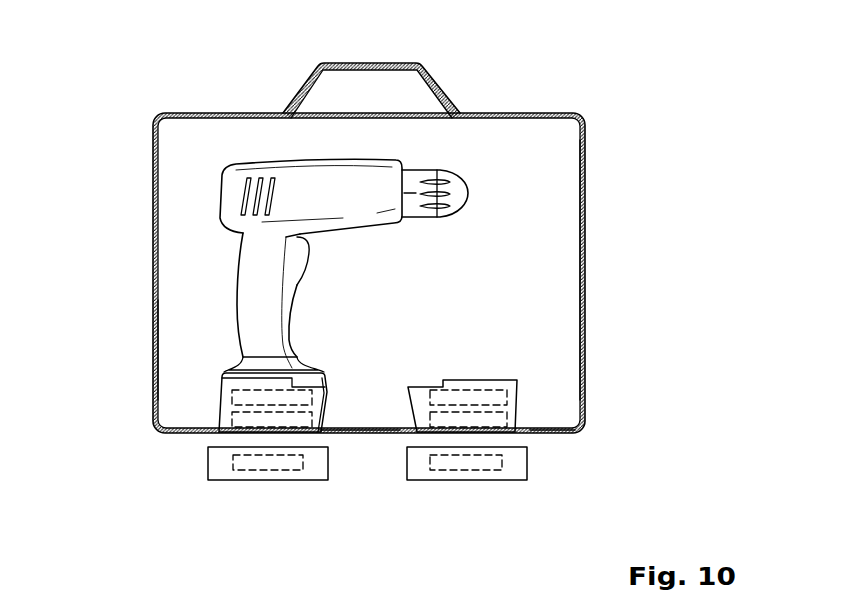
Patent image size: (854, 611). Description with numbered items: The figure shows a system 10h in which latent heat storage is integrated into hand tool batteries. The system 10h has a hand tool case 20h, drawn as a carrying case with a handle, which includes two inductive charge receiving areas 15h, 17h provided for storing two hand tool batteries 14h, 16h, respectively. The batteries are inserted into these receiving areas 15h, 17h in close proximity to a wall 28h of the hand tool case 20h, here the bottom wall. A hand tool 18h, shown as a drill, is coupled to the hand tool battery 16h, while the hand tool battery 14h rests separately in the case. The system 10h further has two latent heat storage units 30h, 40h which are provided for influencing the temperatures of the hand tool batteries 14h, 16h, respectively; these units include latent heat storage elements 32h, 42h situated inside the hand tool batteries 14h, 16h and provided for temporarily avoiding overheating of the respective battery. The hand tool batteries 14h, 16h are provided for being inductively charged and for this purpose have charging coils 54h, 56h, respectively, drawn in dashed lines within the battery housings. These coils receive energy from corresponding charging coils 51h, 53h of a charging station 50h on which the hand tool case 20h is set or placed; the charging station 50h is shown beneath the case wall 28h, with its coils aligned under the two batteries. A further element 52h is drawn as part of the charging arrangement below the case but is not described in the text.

The system 10h is at (361, 287).
The hand tool case 20h is at (592, 104).
The latent heat storage unit 30h is at (600, 349).
The latent heat storage unit 40h is at (134, 412).
The wall 28h is at (377, 450).
The inductive charge receiving area 15h is at (543, 446).
The inductive charge receiving area 17h is at (337, 443).
The hand tool 18h is at (271, 342).
The hand tool battery 16h is at (286, 380).
The hand tool battery 14h is at (540, 378).
The latent heat storage element 32h is at (508, 398).
The charging coil 54h is at (508, 420).
The latent heat storage element 42h is at (222, 396).
The charging coil 56h is at (207, 438).
The charging unit 52h is at (268, 502).
The charging coil 53h is at (283, 471).
The charging station 50h is at (474, 503).
The charging coil 51h is at (468, 471).